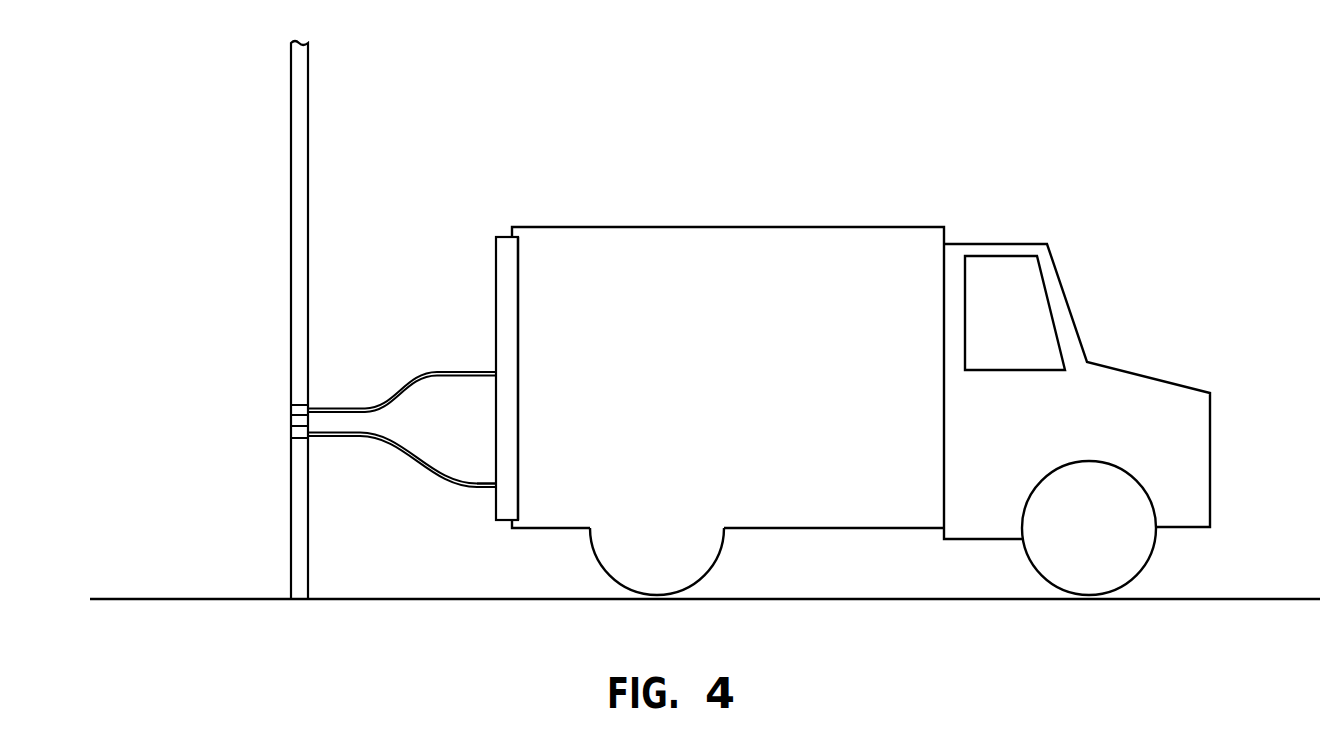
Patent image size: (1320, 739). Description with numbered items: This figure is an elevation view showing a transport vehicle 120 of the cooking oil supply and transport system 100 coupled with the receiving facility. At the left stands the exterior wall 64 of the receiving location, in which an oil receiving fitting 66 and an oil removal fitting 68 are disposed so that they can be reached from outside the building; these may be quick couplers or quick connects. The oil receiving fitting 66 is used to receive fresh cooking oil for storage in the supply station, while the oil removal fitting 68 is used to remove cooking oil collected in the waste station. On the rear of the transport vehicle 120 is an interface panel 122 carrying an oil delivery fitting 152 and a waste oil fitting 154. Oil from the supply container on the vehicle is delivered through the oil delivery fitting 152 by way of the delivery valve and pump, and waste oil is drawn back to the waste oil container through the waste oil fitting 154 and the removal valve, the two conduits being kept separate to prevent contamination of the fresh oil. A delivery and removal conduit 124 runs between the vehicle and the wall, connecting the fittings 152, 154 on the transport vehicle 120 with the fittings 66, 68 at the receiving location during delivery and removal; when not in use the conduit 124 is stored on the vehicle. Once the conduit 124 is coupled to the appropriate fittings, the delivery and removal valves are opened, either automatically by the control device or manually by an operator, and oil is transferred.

The exterior wall 64 is at (308, 103).
The oil receiving fitting 66 is at (312, 447).
The oil removal fitting 68 is at (312, 403).
The cooking oil supply and transport system 100 is at (814, 360).
The transport vehicle 120 is at (1128, 373).
The interface panel 122 is at (493, 280).
The delivery and removal conduit 124 is at (418, 465).
The oil delivery fitting 152 is at (492, 492).
The waste oil fitting 154 is at (492, 373).